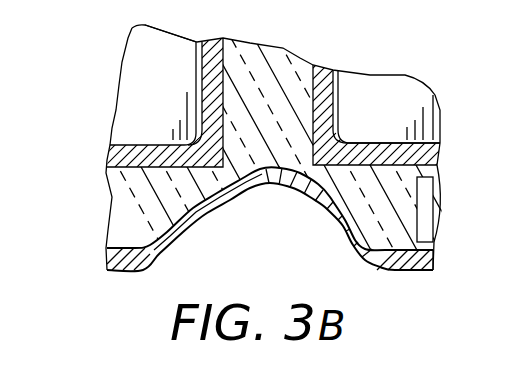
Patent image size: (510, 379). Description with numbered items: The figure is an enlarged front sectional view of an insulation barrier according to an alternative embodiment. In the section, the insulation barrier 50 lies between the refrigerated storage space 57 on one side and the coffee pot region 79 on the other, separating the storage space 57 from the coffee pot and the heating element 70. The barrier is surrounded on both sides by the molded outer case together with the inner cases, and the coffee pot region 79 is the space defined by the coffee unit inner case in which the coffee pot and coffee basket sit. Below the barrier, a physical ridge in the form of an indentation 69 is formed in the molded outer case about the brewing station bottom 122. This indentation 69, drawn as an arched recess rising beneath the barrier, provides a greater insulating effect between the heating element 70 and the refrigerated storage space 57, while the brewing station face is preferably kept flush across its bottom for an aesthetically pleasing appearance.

The insulation barrier 50 is at (270, 82).
The storage space 57 is at (158, 112).
The coffee pot region 79 is at (405, 112).
The indentation 69 is at (280, 239).
The heating element 70 is at (426, 212).
The brewing station bottom 122 is at (189, 240).